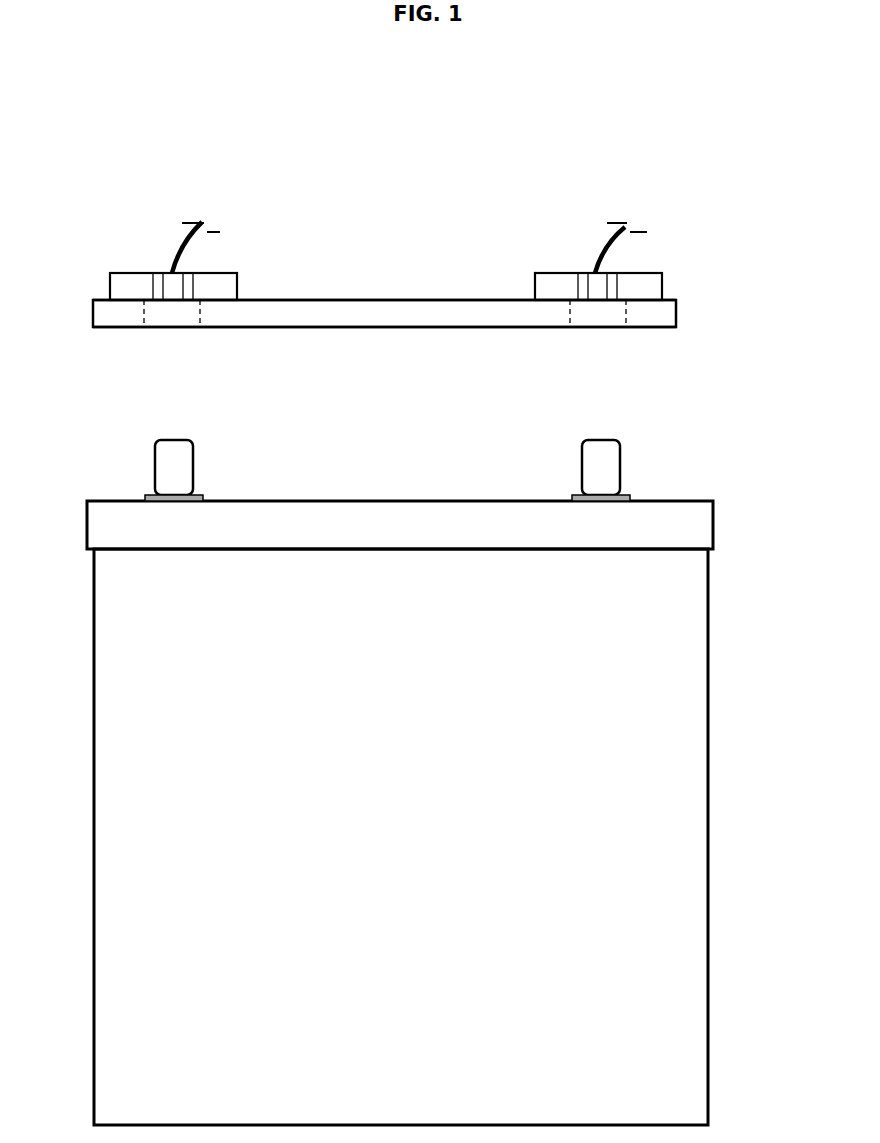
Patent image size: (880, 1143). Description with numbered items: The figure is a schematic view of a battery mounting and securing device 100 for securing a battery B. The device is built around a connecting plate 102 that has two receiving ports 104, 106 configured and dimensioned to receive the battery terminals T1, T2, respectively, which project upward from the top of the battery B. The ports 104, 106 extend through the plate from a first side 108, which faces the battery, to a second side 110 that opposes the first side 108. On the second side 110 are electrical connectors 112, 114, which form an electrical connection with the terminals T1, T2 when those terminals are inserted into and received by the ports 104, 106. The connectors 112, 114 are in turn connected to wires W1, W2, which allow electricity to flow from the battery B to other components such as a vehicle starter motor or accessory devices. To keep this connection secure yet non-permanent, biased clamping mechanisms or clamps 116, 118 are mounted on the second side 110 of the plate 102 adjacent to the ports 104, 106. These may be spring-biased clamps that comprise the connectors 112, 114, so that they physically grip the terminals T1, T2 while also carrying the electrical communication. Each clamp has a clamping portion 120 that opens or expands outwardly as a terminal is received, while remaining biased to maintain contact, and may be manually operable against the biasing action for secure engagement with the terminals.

The battery mounting and securing device 100 is at (701, 70).
The connecting plate 102 is at (100, 318).
The receiving port 104 is at (192, 320).
The receiving port 106 is at (613, 323).
The first side 108 is at (380, 327).
The second side 110 is at (380, 300).
The electrical connector 112 is at (159, 263).
The electrical connector 114 is at (575, 262).
The clamp 116 is at (128, 280).
The clamp 118 is at (538, 287).
The clamping portion 120 is at (190, 290).
The wire W1 is at (190, 252).
The wire W2 is at (603, 250).
The battery terminal T1 is at (188, 482).
The battery terminal T2 is at (615, 482).
The battery B is at (415, 716).